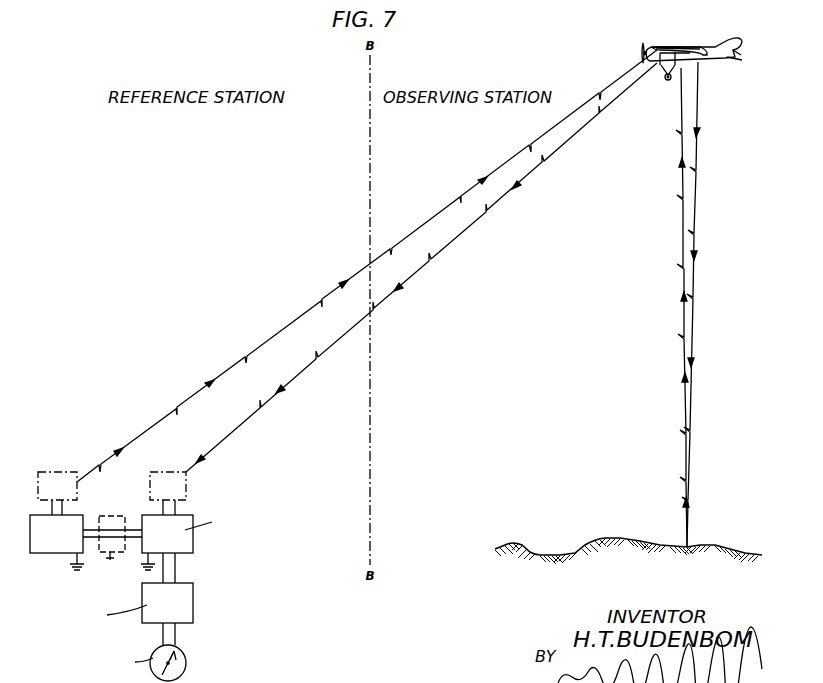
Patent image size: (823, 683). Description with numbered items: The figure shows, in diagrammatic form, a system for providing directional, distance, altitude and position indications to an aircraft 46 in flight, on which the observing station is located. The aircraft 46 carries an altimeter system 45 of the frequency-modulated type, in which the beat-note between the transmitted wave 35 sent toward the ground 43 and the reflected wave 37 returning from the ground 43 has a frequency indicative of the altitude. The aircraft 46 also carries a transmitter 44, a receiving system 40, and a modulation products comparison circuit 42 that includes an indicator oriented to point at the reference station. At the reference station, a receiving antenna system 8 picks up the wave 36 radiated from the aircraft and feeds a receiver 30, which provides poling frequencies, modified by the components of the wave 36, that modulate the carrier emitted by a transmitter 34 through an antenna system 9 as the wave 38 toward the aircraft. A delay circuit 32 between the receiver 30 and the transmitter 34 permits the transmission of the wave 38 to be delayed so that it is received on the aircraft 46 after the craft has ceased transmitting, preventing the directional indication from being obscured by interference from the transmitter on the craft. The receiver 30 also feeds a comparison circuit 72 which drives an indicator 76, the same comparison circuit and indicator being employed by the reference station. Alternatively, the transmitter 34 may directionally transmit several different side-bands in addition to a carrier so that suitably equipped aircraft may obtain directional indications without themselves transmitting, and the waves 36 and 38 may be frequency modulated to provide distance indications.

The antenna system 8 is at (183, 494).
The antenna system 9 is at (48, 477).
The receiver 30 is at (187, 554).
The delay circuit 32 is at (117, 516).
The transmitter 34 is at (48, 553).
The transmitted wave 35 is at (696, 228).
The wave 36 is at (298, 377).
The reflected wave 37 is at (678, 227).
The wave 38 is at (263, 343).
The receiving system 40 is at (696, 58).
The modulation products comparison circuit 42 is at (681, 46).
The ground 43 is at (720, 547).
The transmitter 44 is at (662, 64).
The altimeter system 45 is at (692, 64).
The aircraft 46 is at (712, 47).
The comparison circuit 72 is at (188, 604).
The indicator 76 is at (182, 665).